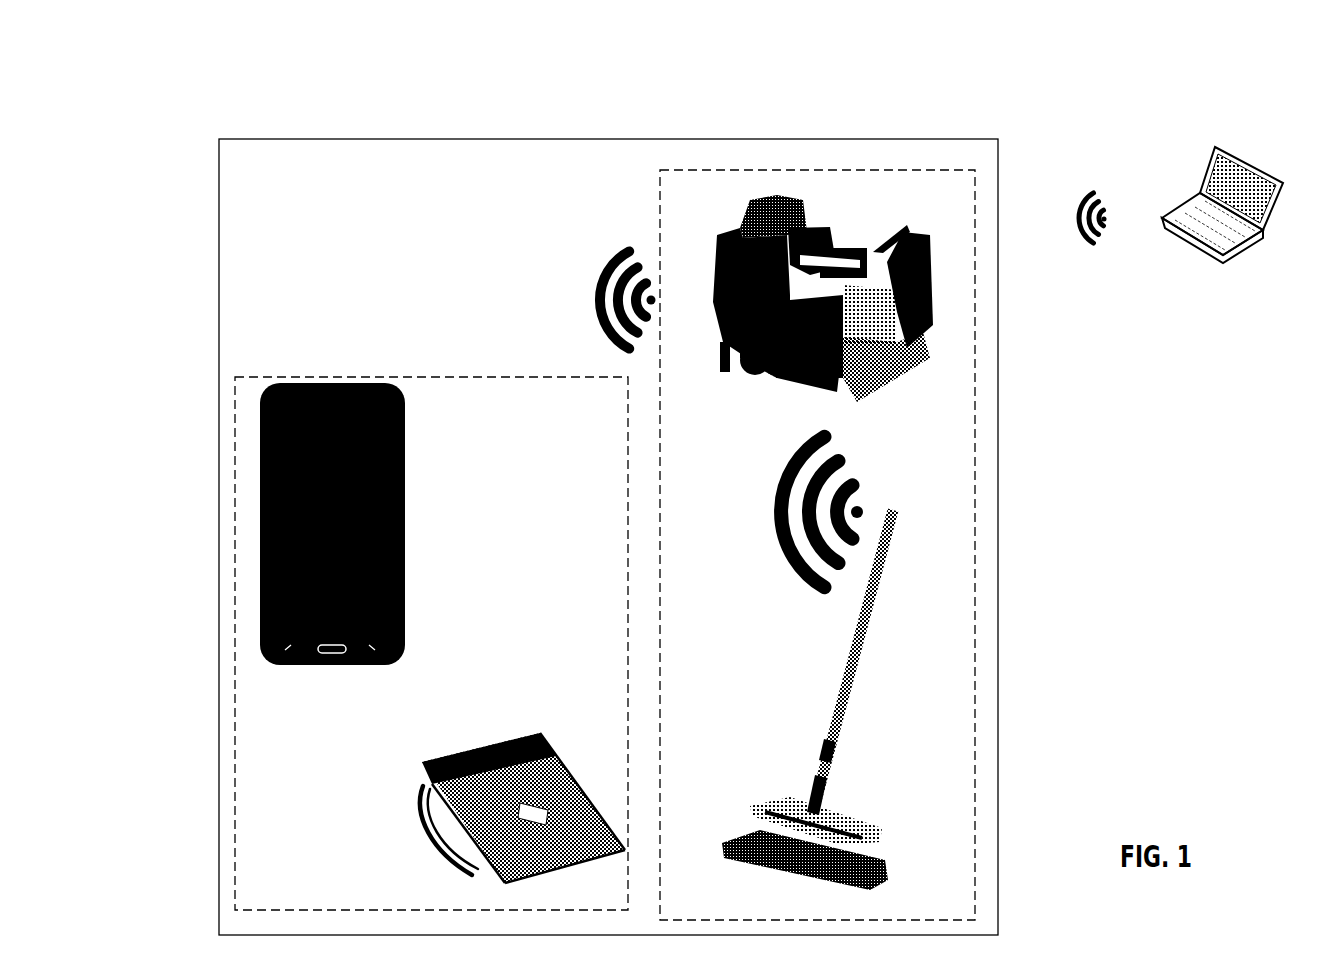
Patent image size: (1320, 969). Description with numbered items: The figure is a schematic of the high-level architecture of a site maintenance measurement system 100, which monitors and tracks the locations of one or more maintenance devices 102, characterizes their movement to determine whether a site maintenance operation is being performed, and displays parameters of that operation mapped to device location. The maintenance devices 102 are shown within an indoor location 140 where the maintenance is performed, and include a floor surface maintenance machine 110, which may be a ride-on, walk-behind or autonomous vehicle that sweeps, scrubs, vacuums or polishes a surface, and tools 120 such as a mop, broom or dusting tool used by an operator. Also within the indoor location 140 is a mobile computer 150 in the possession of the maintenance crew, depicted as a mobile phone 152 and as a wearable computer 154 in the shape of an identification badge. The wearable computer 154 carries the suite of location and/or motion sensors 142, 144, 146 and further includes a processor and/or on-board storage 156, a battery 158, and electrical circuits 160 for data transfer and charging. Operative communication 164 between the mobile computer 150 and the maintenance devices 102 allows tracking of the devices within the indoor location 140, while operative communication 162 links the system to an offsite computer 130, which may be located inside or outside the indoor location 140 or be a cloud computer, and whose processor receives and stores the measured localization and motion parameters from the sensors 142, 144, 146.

The site maintenance measurement system 100 is at (1083, 47).
The maintenance devices 102 is at (652, 218).
The floor surface maintenance machine 110 is at (740, 222).
The tools 120 is at (853, 637).
The offsite computer 130 is at (1240, 262).
The indoor location 140 is at (422, 138).
The location and/or motion sensor 142 is at (448, 752).
The location and/or motion sensor 144 is at (612, 758).
The location and/or motion sensor 146 is at (500, 866).
The mobile computer 150 is at (310, 372).
The mobile phone 152 is at (403, 522).
The wearable computer 154 is at (495, 742).
The on-board storage 156 is at (600, 773).
The battery 158 is at (565, 852).
The electrical circuits 160 is at (422, 803).
The operative communication 162 is at (1087, 243).
The operative communication 164 is at (597, 283).